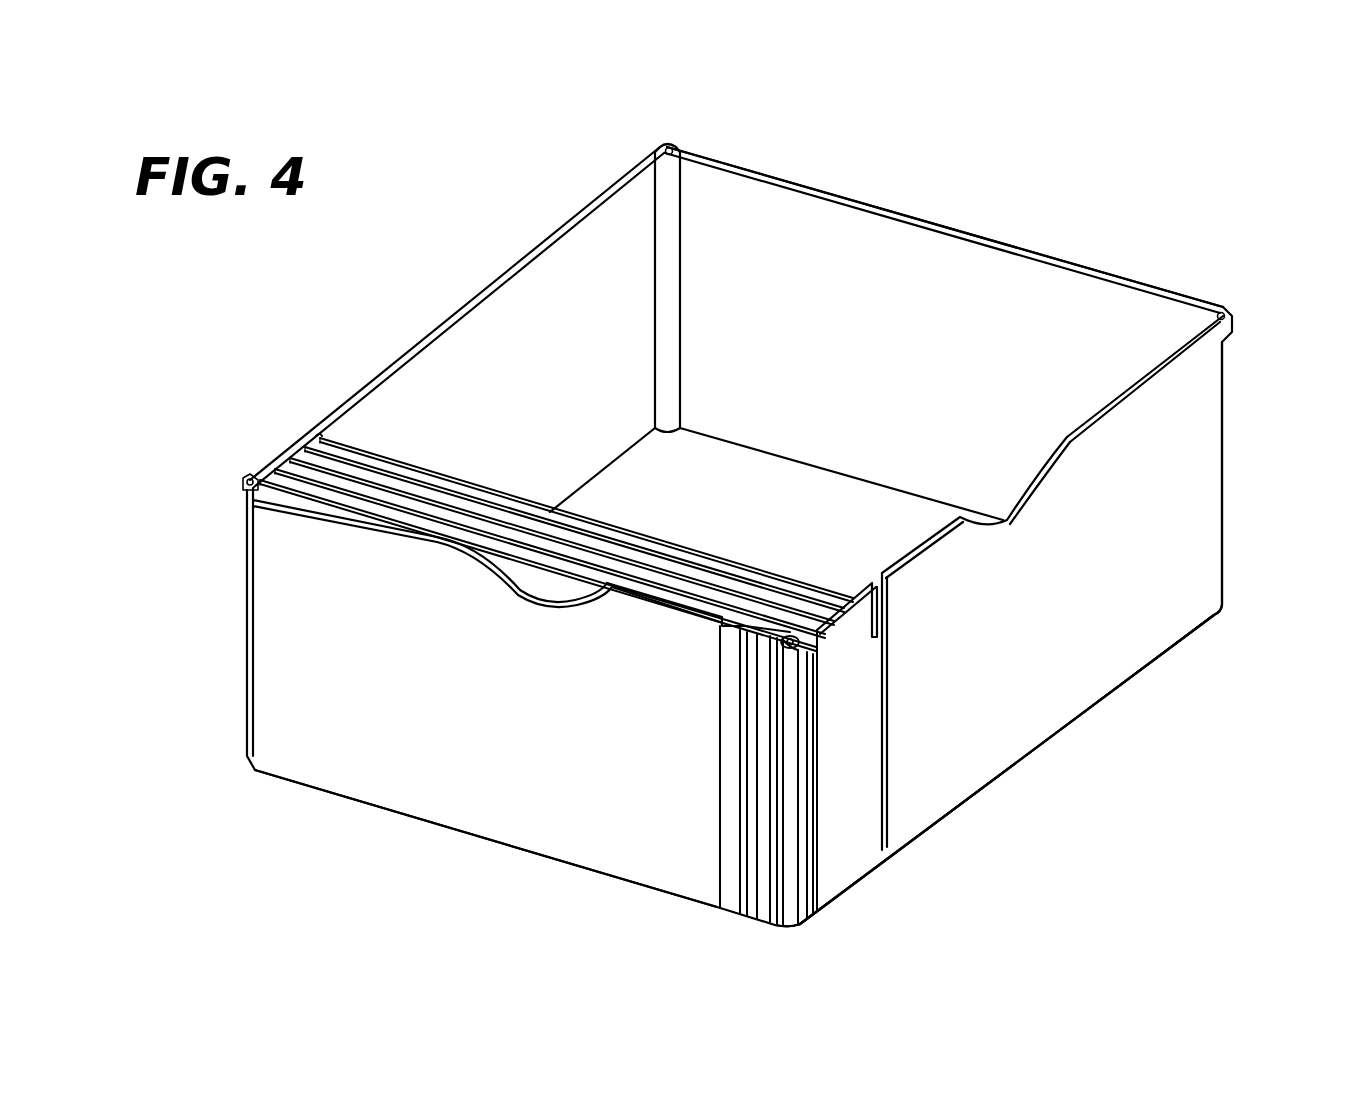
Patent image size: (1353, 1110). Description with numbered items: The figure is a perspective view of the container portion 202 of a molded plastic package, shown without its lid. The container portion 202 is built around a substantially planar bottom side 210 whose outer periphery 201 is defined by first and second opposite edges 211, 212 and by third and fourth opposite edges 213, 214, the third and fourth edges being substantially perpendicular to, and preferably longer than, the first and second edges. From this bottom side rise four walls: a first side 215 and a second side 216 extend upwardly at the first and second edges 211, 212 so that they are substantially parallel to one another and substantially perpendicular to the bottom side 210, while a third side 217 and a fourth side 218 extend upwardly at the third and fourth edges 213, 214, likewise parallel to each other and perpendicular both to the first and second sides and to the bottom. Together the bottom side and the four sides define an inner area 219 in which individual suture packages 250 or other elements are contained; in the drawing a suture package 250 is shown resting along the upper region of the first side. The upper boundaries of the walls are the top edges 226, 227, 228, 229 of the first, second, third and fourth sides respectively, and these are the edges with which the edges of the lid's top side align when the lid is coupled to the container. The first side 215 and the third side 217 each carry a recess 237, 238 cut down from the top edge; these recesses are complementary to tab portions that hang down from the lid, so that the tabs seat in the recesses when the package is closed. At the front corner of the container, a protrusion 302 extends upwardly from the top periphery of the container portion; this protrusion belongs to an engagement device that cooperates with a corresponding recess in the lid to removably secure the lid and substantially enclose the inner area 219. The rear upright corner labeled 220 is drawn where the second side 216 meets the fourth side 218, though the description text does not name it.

The outer periphery 201 is at (645, 890).
The container portion 202 is at (1065, 685).
The bottom side 210 is at (740, 462).
The first edge 211 is at (517, 852).
The second edge 212 is at (893, 485).
The third edge 213 is at (985, 790).
The fourth edge 214 is at (588, 480).
The first side 215 is at (483, 725).
The second side 216 is at (944, 246).
The third side 217 is at (1051, 633).
The fourth side 218 is at (465, 306).
The inner area 219 is at (757, 264).
The rear corner post 220 is at (672, 150).
The top edge of first side 226 is at (310, 503).
The top edge of second side 227 is at (1057, 255).
The top edge of third side 228 is at (1150, 370).
The top edge of fourth side 229 is at (588, 200).
The recess 237 is at (505, 585).
The recess 238 is at (1050, 478).
The suture packages 250 is at (345, 455).
The protrusion 302 is at (797, 650).